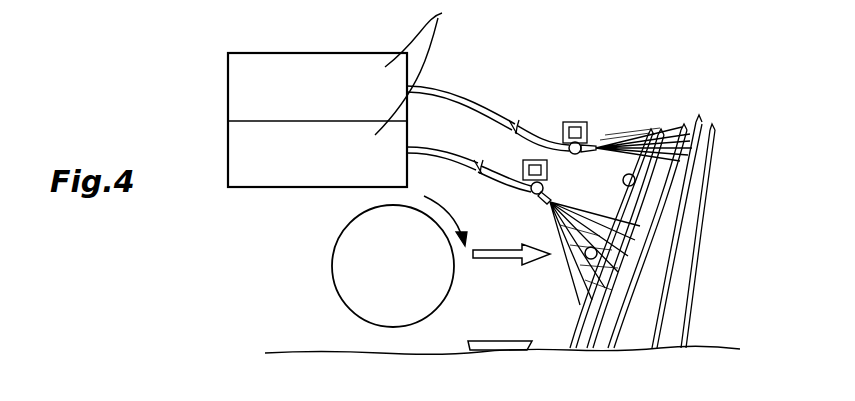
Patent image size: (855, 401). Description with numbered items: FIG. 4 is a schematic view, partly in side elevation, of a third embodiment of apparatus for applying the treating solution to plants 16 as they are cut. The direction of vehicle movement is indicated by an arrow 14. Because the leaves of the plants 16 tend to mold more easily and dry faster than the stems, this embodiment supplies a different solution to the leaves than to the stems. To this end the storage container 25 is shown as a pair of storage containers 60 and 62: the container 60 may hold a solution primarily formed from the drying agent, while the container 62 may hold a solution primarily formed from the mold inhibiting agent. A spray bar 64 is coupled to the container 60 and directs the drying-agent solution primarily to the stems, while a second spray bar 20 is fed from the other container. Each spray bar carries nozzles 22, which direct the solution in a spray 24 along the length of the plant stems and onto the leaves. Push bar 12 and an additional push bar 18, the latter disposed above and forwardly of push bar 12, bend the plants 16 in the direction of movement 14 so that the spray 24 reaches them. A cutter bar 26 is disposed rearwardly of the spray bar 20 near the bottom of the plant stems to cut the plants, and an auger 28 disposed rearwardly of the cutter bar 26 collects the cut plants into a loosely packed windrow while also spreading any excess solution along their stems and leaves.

The storage container 25 is at (228, 108).
The storage container 60 is at (300, 66).
The storage container 62 is at (274, 173).
The spray bar 64 is at (556, 146).
The spray bar 20 is at (528, 195).
The nozzles 22 is at (598, 143).
The spray 24 is at (577, 232).
The push bar 18 is at (623, 180).
The push bar 12 is at (585, 256).
The plants 16 is at (630, 150).
The auger 28 is at (343, 294).
The arrow 14 is at (478, 259).
The cutter bar 26 is at (495, 351).